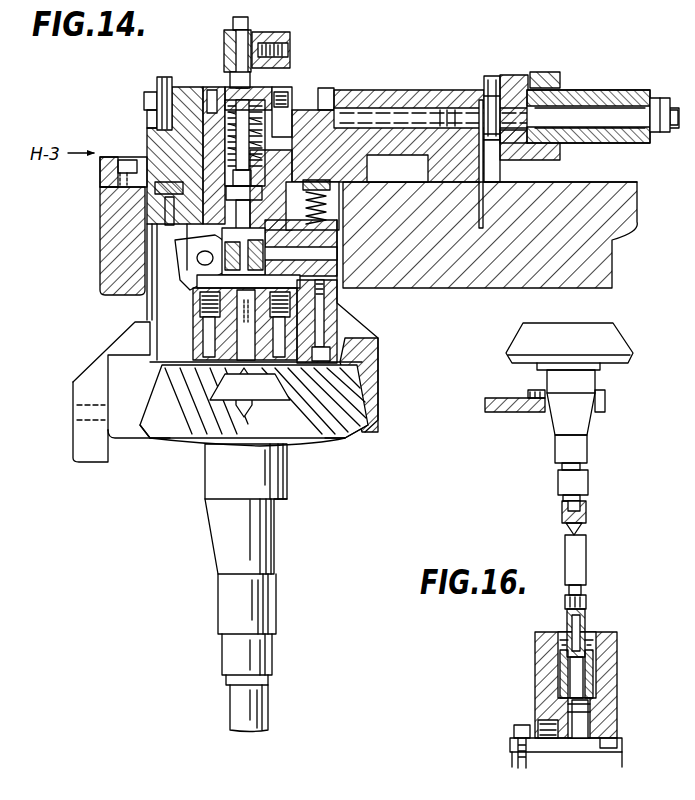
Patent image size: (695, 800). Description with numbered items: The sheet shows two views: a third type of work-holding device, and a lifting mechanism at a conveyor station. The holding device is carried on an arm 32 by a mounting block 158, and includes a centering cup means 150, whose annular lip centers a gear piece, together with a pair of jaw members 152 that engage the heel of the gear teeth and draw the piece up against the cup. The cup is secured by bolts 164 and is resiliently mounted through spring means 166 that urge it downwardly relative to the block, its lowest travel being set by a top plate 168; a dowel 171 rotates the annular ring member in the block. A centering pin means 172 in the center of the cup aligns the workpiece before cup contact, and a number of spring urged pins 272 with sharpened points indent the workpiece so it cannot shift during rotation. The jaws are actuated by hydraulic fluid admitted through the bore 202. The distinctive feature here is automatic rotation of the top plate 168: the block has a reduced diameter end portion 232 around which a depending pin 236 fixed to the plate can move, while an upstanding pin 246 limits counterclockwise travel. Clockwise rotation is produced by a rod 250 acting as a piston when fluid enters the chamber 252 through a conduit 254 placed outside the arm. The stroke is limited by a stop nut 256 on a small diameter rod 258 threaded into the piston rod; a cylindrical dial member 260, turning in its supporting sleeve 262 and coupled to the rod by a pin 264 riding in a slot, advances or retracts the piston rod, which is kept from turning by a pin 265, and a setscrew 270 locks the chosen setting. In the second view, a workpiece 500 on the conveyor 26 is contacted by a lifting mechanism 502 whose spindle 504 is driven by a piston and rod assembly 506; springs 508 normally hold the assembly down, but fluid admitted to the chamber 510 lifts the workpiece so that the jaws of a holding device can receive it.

In FIG. 16, the conveyor 26 is at (605, 401).
In FIG. 14, the arm 32 is at (102, 272).
In FIG. 14, the centering cup means 150 is at (380, 373).
In FIG. 14, the jaw members 152 is at (84, 382).
In FIG. 14, the mounting block 158 is at (152, 141).
In FIG. 14, the bolts 164 is at (345, 320).
In FIG. 14, the spring means 166 is at (340, 214).
In FIG. 14, the top plate 168 is at (146, 95).
In FIG. 14, the dowel 171 is at (165, 206).
In FIG. 14, the centering pin means 172 is at (200, 445).
In FIG. 14, the bore 202 is at (222, 70).
In FIG. 14, the reduced diameter end portion 232 is at (150, 120).
In FIG. 14, the pin 236 is at (288, 108).
In FIG. 14, the upstanding pin 246 is at (158, 77).
In FIG. 14, the rod 250 is at (430, 80).
In FIG. 14, the chamber 252 is at (486, 88).
In FIG. 14, the conduit 254 is at (527, 184).
In FIG. 14, the stop nut 256 is at (657, 100).
In FIG. 14, the small diameter rod 258 is at (486, 94).
In FIG. 14, the cylindrical dial member 260 is at (617, 90).
In FIG. 14, the supporting sleeve 262 is at (560, 82).
In FIG. 14, the pin 264 is at (630, 143).
In FIG. 14, the pin 265 is at (334, 92).
In FIG. 14, the setscrew 270 is at (534, 80).
In FIG. 14, the spring urged pins 272 is at (164, 445).
In FIG. 16, the workpiece 500 is at (566, 418).
In FIG. 16, the lifting mechanism 502 is at (606, 625).
In FIG. 16, the spindle 504 is at (586, 556).
In FIG. 16, the piston and rod assembly 506 is at (614, 677).
In FIG. 16, the springs 508 is at (565, 672).
In FIG. 16, the chamber 510 is at (595, 717).